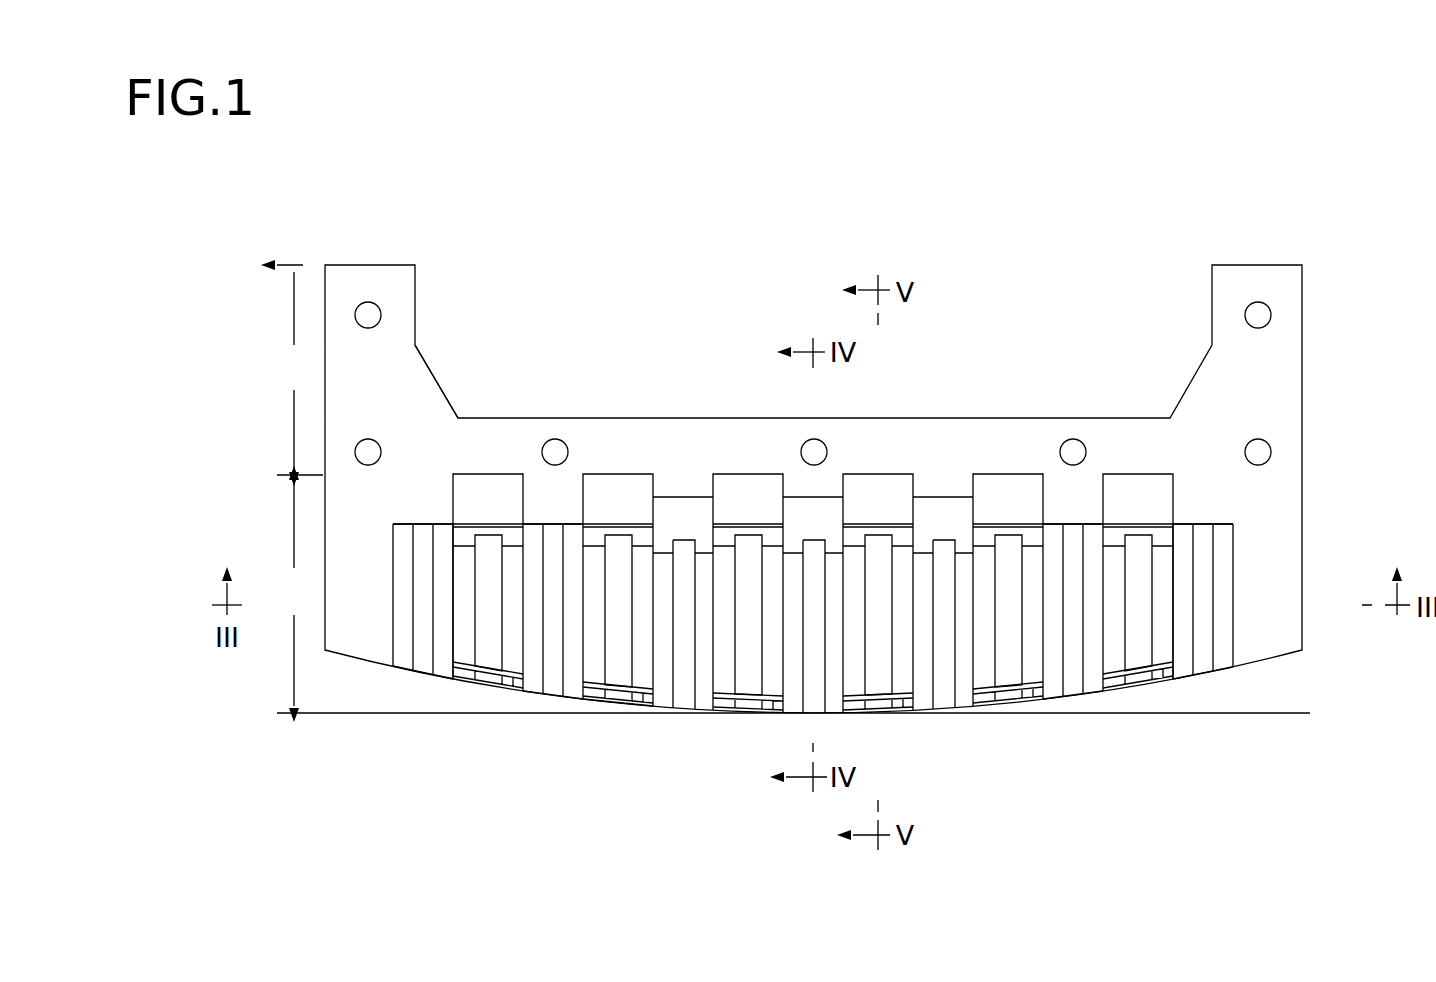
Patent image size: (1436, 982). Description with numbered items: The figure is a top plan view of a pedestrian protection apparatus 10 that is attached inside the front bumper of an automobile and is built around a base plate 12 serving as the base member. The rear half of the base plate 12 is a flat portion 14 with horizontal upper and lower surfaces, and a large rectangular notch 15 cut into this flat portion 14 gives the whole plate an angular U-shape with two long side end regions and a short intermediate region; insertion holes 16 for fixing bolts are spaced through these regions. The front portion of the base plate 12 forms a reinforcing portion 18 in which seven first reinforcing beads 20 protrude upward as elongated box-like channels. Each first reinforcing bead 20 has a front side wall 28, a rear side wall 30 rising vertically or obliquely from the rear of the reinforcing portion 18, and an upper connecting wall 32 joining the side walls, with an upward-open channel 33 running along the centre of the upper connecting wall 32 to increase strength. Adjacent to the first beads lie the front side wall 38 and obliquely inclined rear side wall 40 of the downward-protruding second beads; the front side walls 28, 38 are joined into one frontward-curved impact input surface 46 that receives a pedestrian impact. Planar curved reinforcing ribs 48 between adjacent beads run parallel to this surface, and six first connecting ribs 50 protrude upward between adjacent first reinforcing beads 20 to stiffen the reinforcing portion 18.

The pedestrian protection apparatus 10 is at (1097, 758).
The base plate 12 is at (1312, 403).
The flat portion 14 is at (300, 370).
The rectangular notch 15 is at (425, 350).
The insertion holes 16 is at (372, 306).
The reinforcing portion 18 is at (793, 597).
The first reinforcing beads 20 is at (388, 631).
The front side wall 28 is at (425, 678).
The rear side wall 30 is at (685, 522).
The upper connecting walls 32 is at (443, 648).
The channel 33 is at (422, 650).
The front side wall 38 is at (495, 687).
The rear side wall 40 is at (468, 495).
The impact input surface 46 is at (613, 707).
The reinforcing ribs 48 is at (638, 690).
The first connecting ribs 50 is at (497, 522).